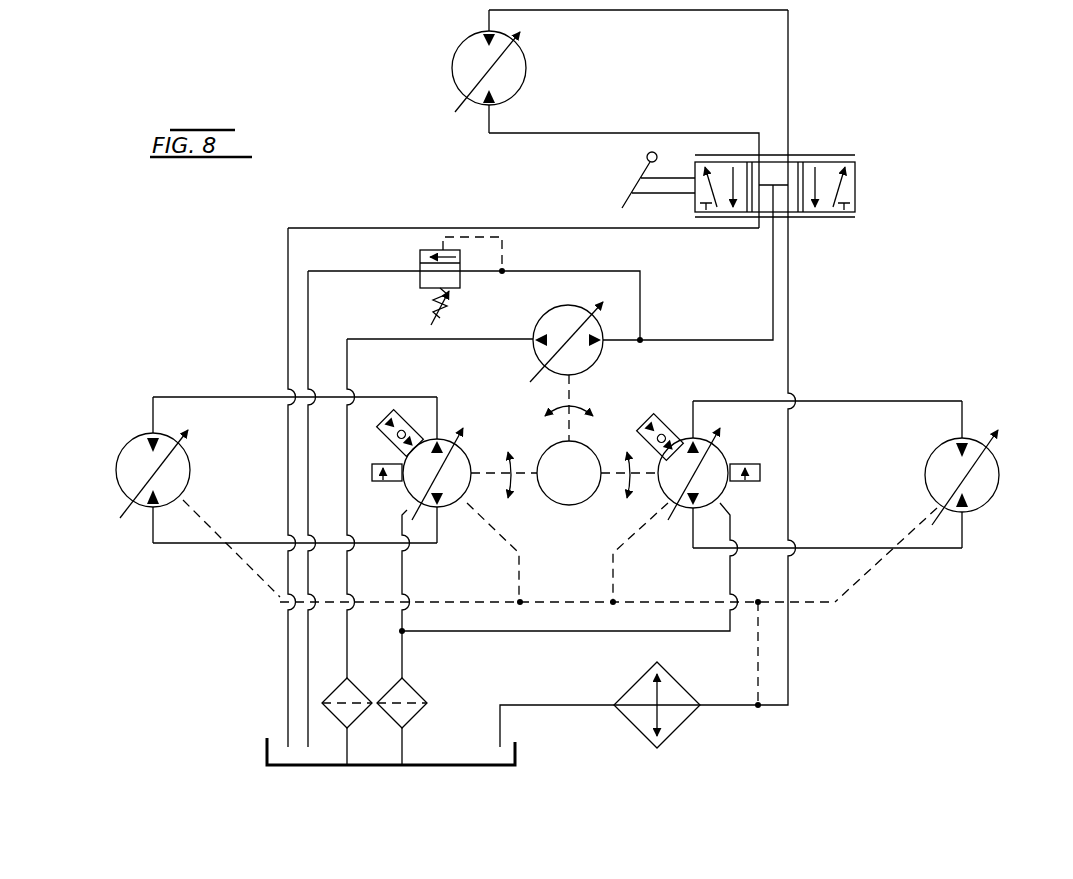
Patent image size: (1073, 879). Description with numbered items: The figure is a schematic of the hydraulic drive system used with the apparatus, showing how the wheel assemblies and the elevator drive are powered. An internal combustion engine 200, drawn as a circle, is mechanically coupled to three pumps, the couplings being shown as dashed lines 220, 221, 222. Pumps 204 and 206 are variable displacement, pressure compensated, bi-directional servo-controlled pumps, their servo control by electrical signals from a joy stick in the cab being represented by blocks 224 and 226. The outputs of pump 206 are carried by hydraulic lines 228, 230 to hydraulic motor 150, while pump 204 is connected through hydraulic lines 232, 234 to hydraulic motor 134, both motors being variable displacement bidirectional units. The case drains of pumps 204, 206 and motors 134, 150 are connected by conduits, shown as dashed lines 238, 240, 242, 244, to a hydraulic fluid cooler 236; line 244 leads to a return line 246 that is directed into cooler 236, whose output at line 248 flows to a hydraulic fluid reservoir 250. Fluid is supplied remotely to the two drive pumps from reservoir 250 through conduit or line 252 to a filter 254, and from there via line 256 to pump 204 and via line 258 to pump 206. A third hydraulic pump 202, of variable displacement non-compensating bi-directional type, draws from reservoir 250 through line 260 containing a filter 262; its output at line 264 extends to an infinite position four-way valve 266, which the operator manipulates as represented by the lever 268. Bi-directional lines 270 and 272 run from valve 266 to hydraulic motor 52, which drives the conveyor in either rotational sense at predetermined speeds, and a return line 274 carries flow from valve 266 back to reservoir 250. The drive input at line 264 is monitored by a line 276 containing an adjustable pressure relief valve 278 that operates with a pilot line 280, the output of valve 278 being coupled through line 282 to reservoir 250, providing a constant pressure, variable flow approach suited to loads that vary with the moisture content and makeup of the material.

The hydraulic motor 52 is at (452, 66).
The hydraulic motor 134 is at (124, 446).
The hydraulic motor 150 is at (1000, 475).
The internal combustion engine 200 is at (585, 447).
The hydraulic pump 202 is at (564, 306).
The pump 204 is at (470, 450).
The pump 206 is at (725, 460).
The dashed line 220 is at (574, 400).
The dashed line 221 is at (486, 480).
The dashed line 222 is at (607, 482).
The block 224 is at (396, 424).
The block 226 is at (662, 416).
The hydraulic line 228 is at (885, 401).
The hydraulic line 230 is at (828, 548).
The hydraulic line 232 is at (211, 397).
The hydraulic line 234 is at (266, 543).
The hydraulic fluid cooler 236 is at (682, 732).
The dashed line 238 is at (581, 603).
The dashed line 240 is at (521, 554).
The dashed line 242 is at (612, 584).
The line 244 is at (757, 680).
The return line 246 is at (789, 294).
The line 248 is at (570, 705).
The hydraulic fluid reservoir 250 is at (518, 752).
The conduit or line 252 is at (404, 746).
The filter 254 is at (416, 690).
The line 256 is at (404, 577).
The line 258 is at (626, 631).
The line 260 is at (506, 318).
The filter 262 is at (348, 682).
The line 264 is at (691, 340).
The infinite position four-way valve 266 is at (824, 156).
The lever 268 is at (646, 163).
The bi-directional line 270 is at (650, 10).
The bi-directional line 272 is at (636, 133).
The return line 274 is at (426, 228).
The line 276 is at (602, 271).
The adjustable pressure relief valve 278 is at (420, 256).
The pilot line 280 is at (506, 245).
The line 282 is at (309, 306).